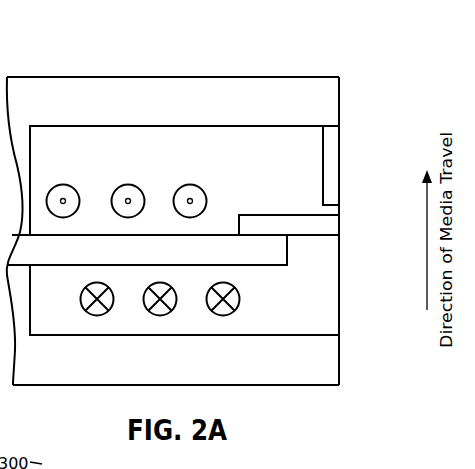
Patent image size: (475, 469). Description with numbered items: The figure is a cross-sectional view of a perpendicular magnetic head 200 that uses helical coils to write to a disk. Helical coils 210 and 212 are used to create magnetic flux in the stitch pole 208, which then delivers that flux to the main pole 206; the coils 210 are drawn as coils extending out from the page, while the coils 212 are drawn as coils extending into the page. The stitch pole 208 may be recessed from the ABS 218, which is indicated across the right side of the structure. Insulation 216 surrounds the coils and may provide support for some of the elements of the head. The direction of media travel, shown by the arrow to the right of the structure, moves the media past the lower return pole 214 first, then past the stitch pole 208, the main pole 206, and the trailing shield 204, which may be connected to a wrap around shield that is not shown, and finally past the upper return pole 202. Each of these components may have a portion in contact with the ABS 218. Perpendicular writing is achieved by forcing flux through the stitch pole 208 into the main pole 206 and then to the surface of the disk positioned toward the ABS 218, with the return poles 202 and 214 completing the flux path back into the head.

The perpendicular magnetic head 200 is at (126, 51).
The upper return pole 202 is at (252, 109).
The trailing shield 204 is at (339, 170).
The main pole 206 is at (339, 221).
The stitch pole 208 is at (204, 260).
The helical coils 210 is at (60, 185).
The helical coils 212 is at (79, 303).
The lower return pole 214 is at (202, 369).
The insulation 216 is at (287, 176).
The ABS 218 is at (346, 94).